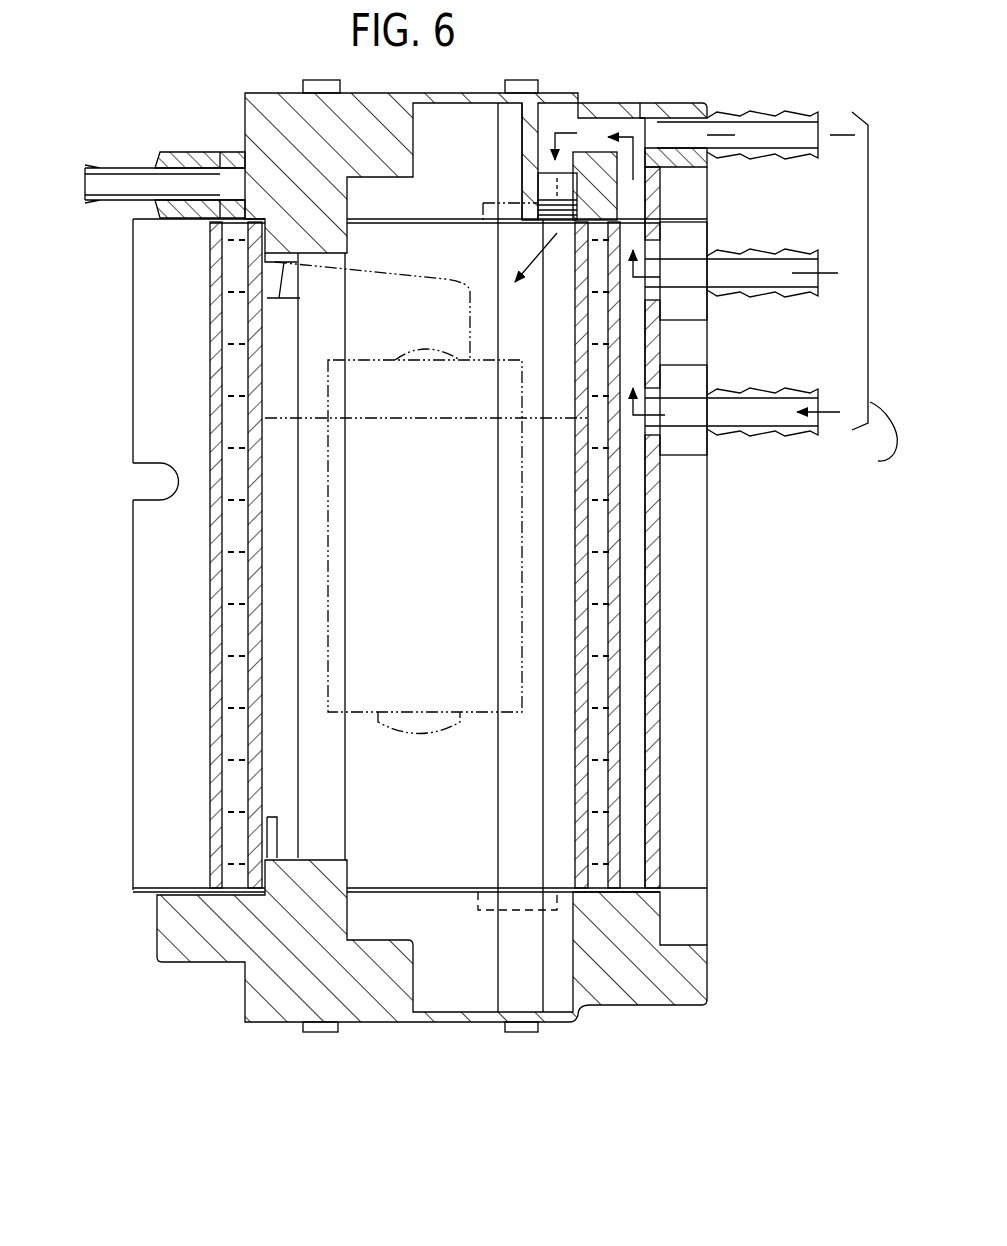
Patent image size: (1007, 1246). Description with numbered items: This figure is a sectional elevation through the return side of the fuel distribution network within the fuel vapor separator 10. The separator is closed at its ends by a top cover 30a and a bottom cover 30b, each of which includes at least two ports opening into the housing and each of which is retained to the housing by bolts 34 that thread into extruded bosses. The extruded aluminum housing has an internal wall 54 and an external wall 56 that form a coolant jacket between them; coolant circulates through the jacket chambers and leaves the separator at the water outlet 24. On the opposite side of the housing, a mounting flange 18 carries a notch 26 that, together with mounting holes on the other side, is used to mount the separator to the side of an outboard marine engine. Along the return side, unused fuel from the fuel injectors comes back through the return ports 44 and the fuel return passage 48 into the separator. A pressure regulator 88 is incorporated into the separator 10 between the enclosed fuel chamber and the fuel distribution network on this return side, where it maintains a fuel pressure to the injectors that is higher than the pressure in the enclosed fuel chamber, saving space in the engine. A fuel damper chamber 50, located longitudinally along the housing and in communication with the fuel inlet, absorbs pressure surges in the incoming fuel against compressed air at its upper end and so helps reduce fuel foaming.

The fuel vapor separator 10 is at (659, 70).
The mounting flange 18 is at (170, 672).
The water outlet 24 is at (100, 190).
The notch 26 is at (150, 467).
The top cover 30a is at (585, 92).
The bottom cover 30b is at (580, 1014).
The bolts 34 is at (322, 79).
The return ports 44 is at (800, 141).
The fuel return passage 48 is at (632, 530).
The fuel damper chamber 50 is at (598, 813).
The internal wall 54 is at (216, 518).
The external wall 56 is at (219, 567).
The pressure regulator 88 is at (547, 188).